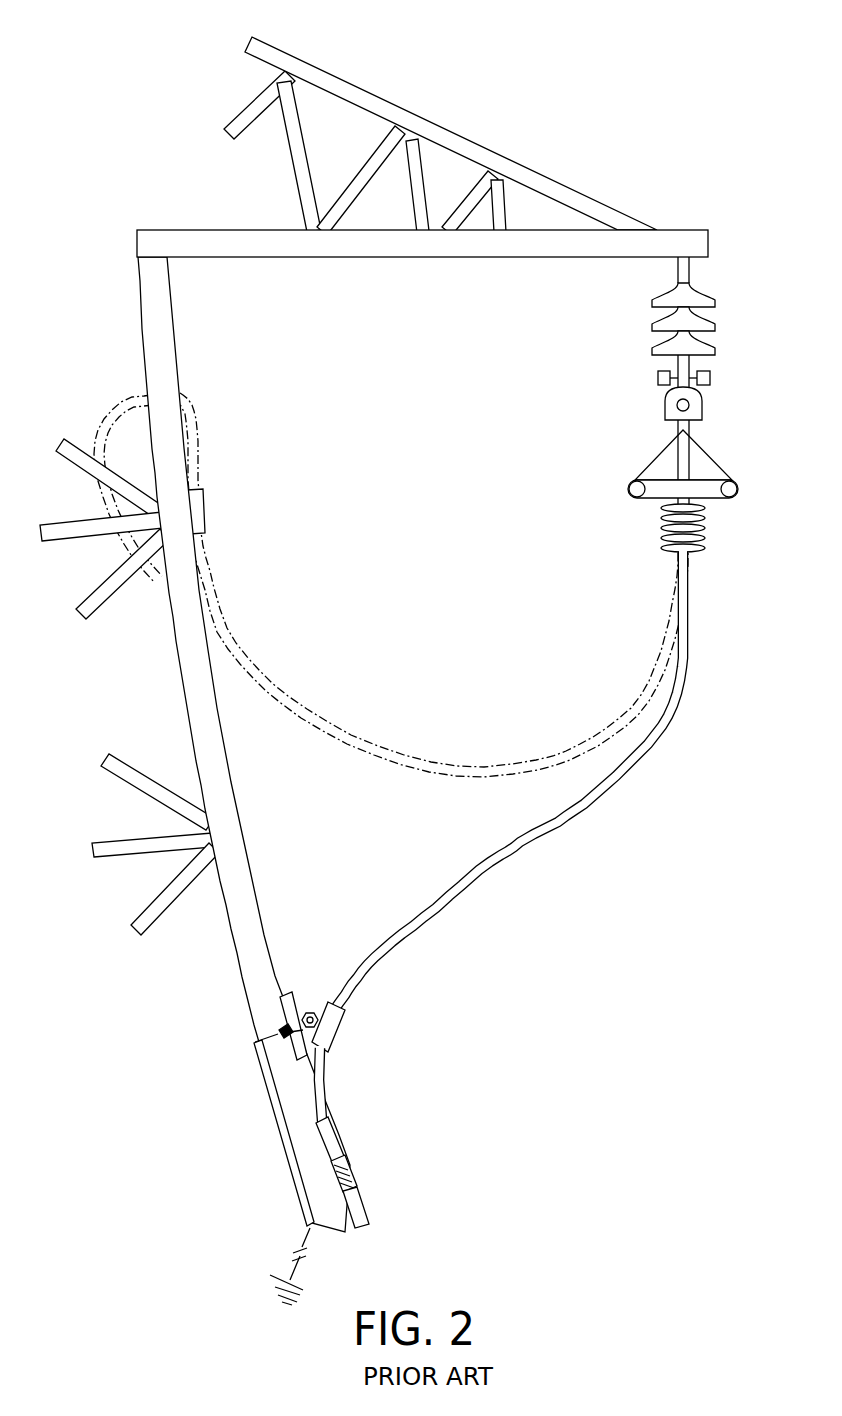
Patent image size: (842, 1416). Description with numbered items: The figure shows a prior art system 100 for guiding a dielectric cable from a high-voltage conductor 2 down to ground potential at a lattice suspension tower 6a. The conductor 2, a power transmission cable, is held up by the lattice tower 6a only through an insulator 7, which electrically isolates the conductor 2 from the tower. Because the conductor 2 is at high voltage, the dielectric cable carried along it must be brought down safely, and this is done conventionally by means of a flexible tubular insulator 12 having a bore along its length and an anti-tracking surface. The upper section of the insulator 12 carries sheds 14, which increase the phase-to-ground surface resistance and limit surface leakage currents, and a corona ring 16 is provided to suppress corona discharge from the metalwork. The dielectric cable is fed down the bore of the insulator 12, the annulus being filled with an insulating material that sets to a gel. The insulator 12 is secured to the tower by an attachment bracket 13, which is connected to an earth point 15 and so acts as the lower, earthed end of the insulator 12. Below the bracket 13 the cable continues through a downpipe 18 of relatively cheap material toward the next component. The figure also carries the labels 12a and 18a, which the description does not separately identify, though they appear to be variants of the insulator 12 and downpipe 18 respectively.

The prior art system 100 is at (162, 40).
The lattice tower 6a is at (393, 103).
The insulator 7 is at (710, 322).
The conductor 2 is at (690, 405).
The corona ring 16 is at (738, 487).
The sheds 14 is at (707, 527).
The insulator 12 is at (565, 823).
The alternative cable routing 12a is at (352, 740).
The cable loop around pole 18a is at (118, 406).
The attachment bracket 13 is at (293, 1000).
The downpipe 18 is at (364, 1207).
The earth point 15 is at (310, 1226).